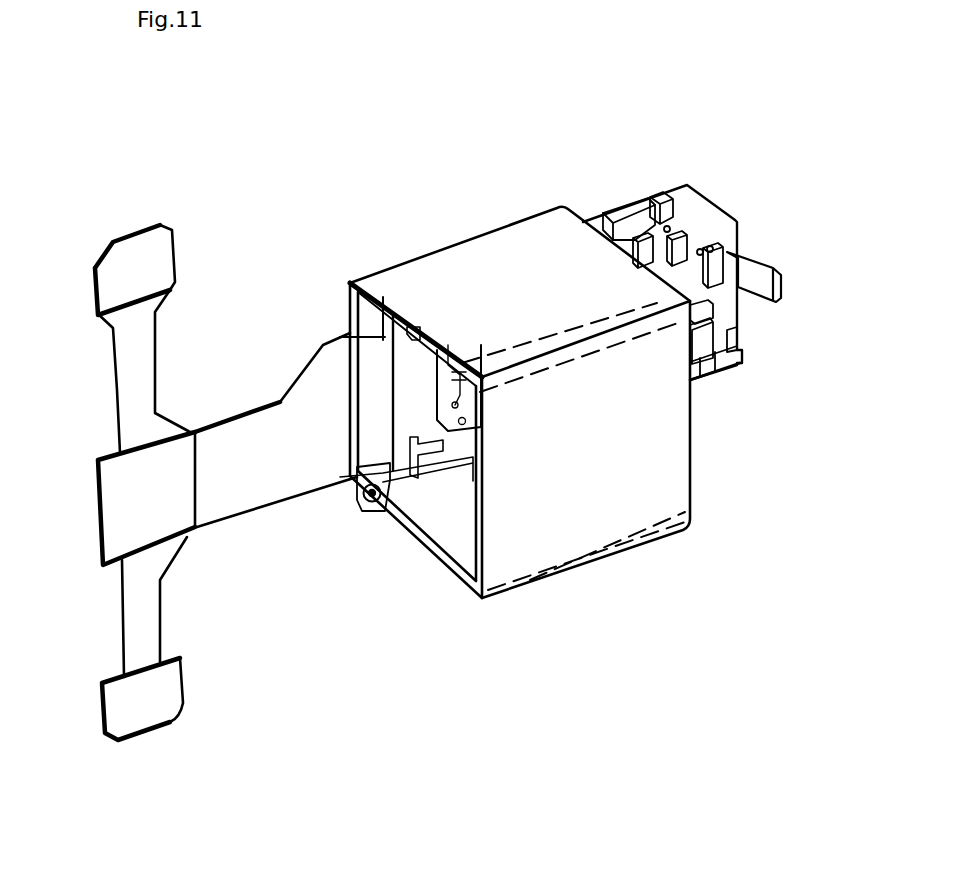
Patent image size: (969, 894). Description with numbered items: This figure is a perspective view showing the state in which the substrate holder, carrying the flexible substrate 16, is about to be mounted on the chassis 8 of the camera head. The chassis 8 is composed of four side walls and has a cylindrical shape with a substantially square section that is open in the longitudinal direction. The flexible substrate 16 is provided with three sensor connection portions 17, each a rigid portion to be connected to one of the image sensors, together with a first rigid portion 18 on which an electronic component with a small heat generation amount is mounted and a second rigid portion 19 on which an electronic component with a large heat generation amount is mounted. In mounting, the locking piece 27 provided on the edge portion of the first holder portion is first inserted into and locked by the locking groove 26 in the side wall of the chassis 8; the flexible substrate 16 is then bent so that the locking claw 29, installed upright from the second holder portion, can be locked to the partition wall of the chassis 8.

The chassis 8 is at (508, 214).
The flexible substrate 16 is at (243, 404).
The sensor connection portion 17 is at (137, 250).
The first rigid portion 18 is at (417, 365).
The second rigid portion 19 is at (690, 272).
The locking groove 26 is at (356, 479).
The locking piece 27 is at (400, 525).
The locking claw 29 is at (786, 285).